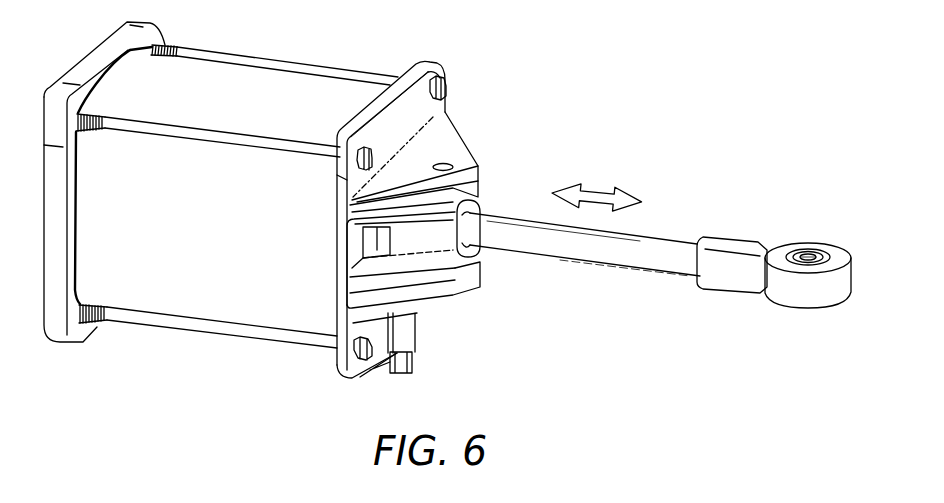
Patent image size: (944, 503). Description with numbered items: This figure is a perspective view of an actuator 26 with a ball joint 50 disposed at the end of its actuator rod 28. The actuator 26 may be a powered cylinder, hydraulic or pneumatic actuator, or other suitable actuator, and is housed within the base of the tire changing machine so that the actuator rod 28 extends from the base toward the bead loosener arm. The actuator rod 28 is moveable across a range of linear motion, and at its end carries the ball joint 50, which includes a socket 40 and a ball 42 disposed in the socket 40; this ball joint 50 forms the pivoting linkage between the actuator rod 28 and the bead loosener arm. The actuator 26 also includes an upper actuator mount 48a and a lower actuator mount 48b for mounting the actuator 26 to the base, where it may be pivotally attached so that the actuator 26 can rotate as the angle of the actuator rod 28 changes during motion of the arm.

The actuator 26 is at (240, 335).
The actuator rod 28 is at (577, 255).
The socket 40 is at (790, 293).
The ball 42 is at (830, 258).
The upper actuator mount 48a is at (460, 143).
The lower actuator mount 48b is at (442, 298).
The ball joint 50 is at (806, 234).